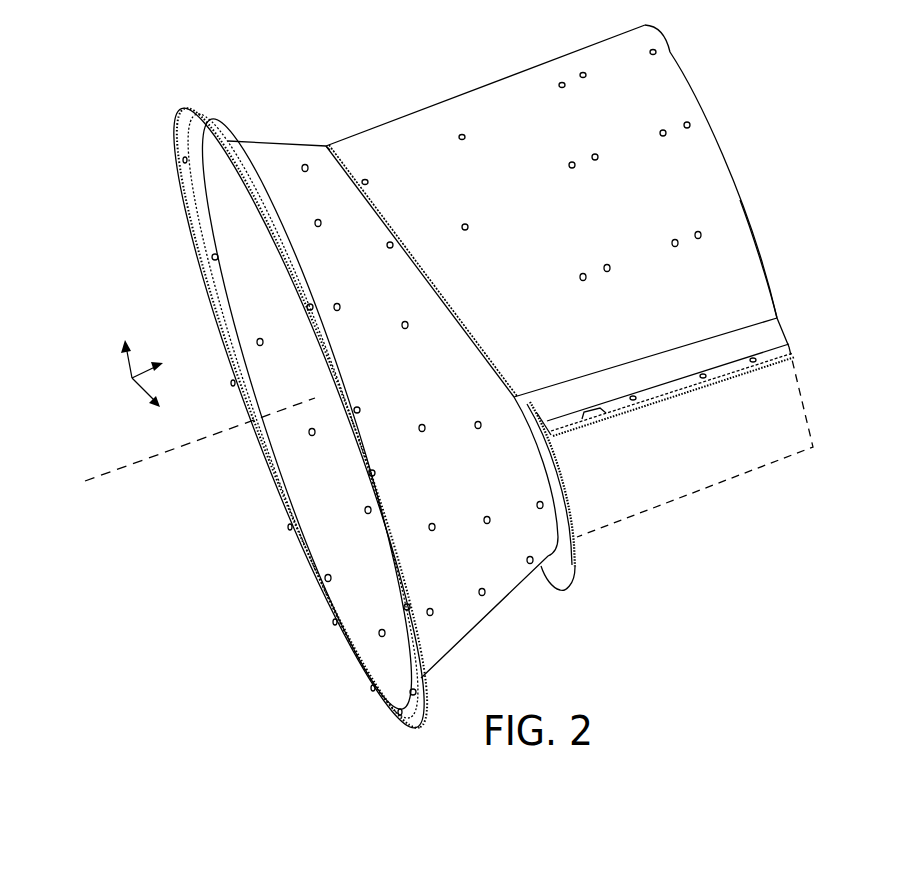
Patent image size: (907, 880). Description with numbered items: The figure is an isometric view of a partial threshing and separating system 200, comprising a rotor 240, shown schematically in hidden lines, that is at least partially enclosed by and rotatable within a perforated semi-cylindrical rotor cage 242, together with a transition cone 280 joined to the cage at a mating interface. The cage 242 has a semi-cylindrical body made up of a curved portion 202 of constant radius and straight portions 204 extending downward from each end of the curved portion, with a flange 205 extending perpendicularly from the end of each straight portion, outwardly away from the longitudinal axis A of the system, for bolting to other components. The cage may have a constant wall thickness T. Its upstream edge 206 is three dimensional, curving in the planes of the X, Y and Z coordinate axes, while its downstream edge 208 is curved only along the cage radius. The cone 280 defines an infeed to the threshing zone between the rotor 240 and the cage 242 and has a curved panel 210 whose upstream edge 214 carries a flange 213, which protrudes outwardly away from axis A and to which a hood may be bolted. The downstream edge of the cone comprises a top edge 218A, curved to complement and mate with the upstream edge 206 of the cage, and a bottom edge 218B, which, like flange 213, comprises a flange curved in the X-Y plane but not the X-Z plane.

The threshing and separating system 200 is at (470, 384).
The flange 213 is at (202, 113).
The upstream edge 214 is at (180, 164).
The curved portion 202 is at (589, 186).
The rotor cage 242 is at (685, 147).
The downstream edge 208 is at (757, 240).
The straight portion 204 is at (760, 325).
The flange 205 is at (732, 365).
The rotor 240 is at (812, 406).
The transition cone 280 is at (533, 475).
The bottom edge 218B is at (577, 563).
The curved panel 210 is at (443, 333).
The upstream edge 206 is at (407, 401).
The top edge 218A is at (500, 268).
The wall thickness T is at (225, 140).
The longitudinal axis A is at (186, 450).
The X axis X is at (153, 408).
The Y axis Y is at (124, 342).
The Z axis Z is at (157, 360).